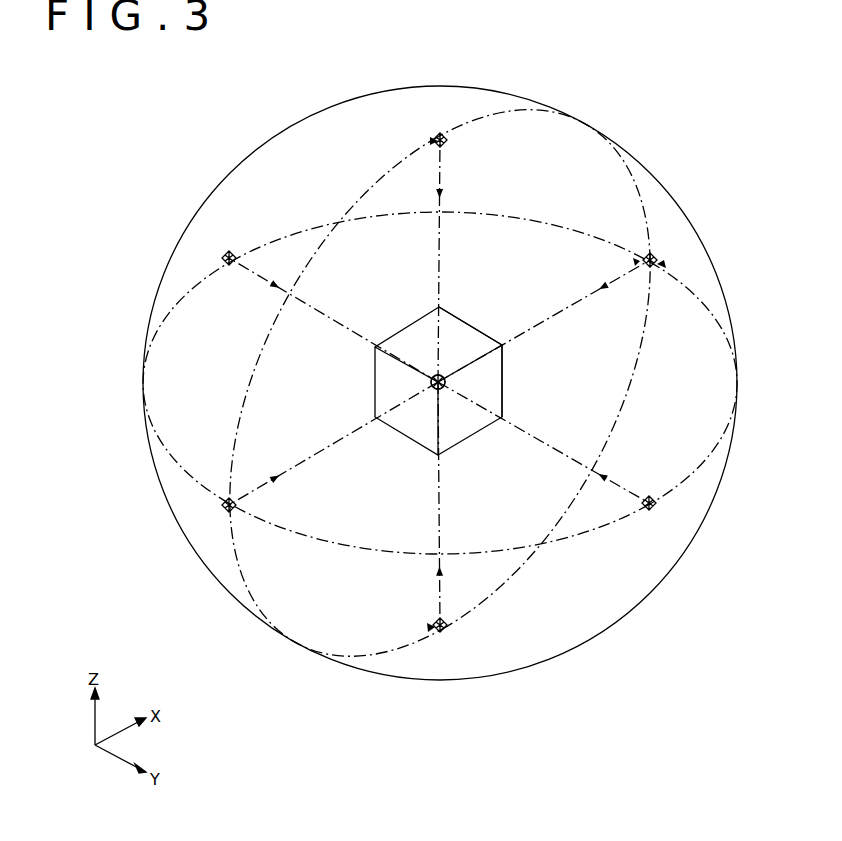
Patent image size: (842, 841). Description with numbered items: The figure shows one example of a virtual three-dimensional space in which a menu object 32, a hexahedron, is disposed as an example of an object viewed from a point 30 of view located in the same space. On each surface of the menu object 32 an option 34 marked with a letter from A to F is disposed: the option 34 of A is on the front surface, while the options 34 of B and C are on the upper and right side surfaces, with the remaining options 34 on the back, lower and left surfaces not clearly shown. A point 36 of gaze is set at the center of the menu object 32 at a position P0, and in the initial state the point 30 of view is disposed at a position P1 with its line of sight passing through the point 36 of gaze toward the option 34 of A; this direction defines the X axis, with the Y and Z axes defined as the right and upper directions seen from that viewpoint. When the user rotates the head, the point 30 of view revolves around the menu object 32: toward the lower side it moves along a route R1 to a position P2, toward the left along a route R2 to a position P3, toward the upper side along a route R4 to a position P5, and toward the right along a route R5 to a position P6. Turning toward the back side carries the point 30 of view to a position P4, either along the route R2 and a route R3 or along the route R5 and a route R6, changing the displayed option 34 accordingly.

The point of view 30 is at (446, 148).
The menu object 32 is at (478, 408).
The option 34 is at (478, 335).
The point of gaze 36 is at (443, 392).
The position P0 is at (432, 376).
The position P1 is at (225, 510).
The position P2 is at (443, 134).
The position P3 is at (648, 497).
The position P4 is at (653, 262).
The position P5 is at (447, 627).
The position P6 is at (229, 263).
The route R1 is at (375, 182).
The route R2 is at (592, 540).
The route R3 is at (720, 440).
The route R4 is at (252, 593).
The route R5 is at (168, 440).
The route R6 is at (308, 218).